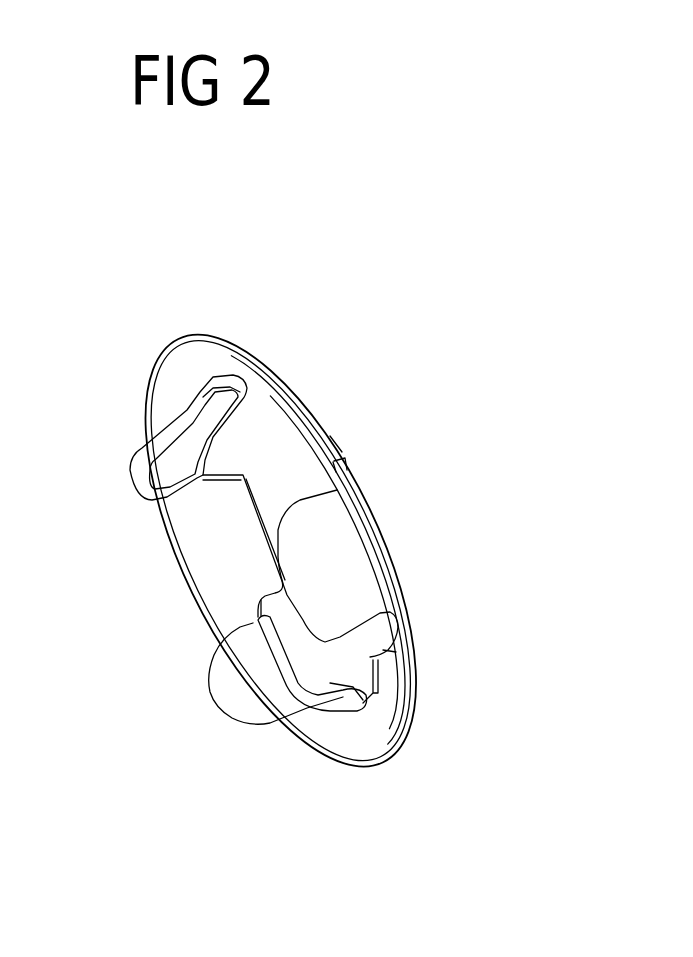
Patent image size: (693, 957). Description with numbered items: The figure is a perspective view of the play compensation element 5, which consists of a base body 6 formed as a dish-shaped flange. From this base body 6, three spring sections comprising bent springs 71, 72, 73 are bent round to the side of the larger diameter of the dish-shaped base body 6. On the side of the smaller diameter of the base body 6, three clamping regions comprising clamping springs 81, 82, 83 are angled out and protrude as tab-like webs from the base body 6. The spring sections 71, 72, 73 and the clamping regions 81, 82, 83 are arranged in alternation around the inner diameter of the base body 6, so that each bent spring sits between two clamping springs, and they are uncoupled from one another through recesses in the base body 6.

The play compensation element 5 is at (309, 372).
The base body 6 is at (173, 343).
The bent spring 71 is at (130, 482).
The bent spring 72 is at (222, 704).
The bent spring 73 is at (330, 547).
The clamping spring 81 is at (248, 529).
The clamping spring 82 is at (377, 680).
The clamping spring 83 is at (317, 423).